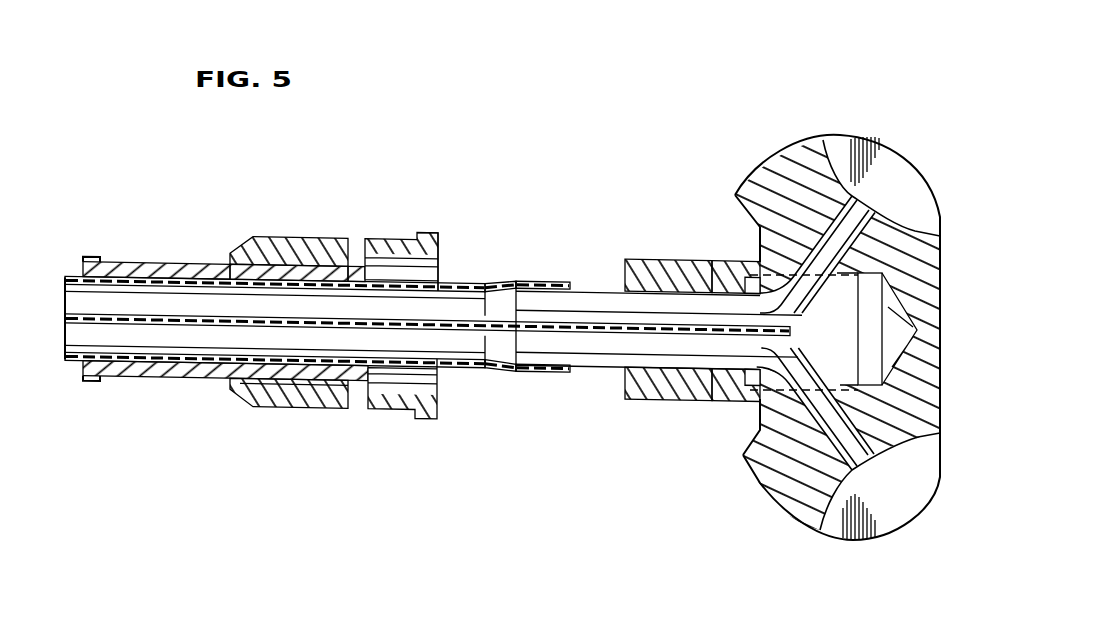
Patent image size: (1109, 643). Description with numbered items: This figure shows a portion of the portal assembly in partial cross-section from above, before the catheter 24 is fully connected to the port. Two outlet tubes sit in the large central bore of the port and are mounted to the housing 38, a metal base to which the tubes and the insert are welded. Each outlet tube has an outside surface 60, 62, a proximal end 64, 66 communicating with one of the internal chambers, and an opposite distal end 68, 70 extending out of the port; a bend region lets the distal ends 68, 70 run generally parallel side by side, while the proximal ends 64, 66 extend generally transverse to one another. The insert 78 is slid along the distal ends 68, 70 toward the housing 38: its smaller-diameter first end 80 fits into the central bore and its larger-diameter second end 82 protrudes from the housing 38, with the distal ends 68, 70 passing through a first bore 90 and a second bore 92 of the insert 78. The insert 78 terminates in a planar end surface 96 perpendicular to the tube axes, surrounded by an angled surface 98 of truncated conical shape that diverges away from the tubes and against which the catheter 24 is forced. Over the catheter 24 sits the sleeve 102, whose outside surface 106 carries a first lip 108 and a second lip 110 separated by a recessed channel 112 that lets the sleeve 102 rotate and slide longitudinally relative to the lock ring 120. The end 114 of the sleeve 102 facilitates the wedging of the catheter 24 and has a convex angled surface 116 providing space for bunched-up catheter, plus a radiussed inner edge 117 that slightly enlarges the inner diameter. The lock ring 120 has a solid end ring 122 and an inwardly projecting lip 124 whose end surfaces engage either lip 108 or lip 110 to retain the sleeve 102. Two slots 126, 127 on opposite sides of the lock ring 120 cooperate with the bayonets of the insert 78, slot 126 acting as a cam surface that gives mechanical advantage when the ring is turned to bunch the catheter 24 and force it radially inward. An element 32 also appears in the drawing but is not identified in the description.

The catheter 24 is at (75, 272).
The outer tube 32 is at (542, 284).
The housing 38 is at (752, 184).
The outside surface 60 is at (594, 291).
The outside surface 62 is at (593, 372).
The proximal end 64 is at (873, 182).
The proximal end 66 is at (883, 505).
The distal end 68 is at (492, 290).
The distal end 70 is at (488, 372).
The insert 78 is at (670, 260).
The first end 80 is at (890, 238).
The second end 82 is at (662, 400).
The first bore 90 is at (713, 260).
The second bore 92 is at (700, 400).
The planar end surface 96 is at (614, 290).
The angled surface 98 is at (624, 380).
The sleeve 102 is at (168, 380).
The outside surface 106 is at (127, 380).
The first lip 108 is at (106, 380).
The second lip 110 is at (238, 390).
The recessed channel 112 is at (208, 380).
The end 114 is at (308, 374).
The angled surface 116 is at (288, 382).
The radiussed inner edge 117 is at (305, 283).
The lock ring 120 is at (412, 240).
The solid end ring 122 is at (432, 236).
The inwardly projecting lip 124 is at (265, 252).
The slot 126 is at (352, 280).
The slot 127 is at (358, 394).